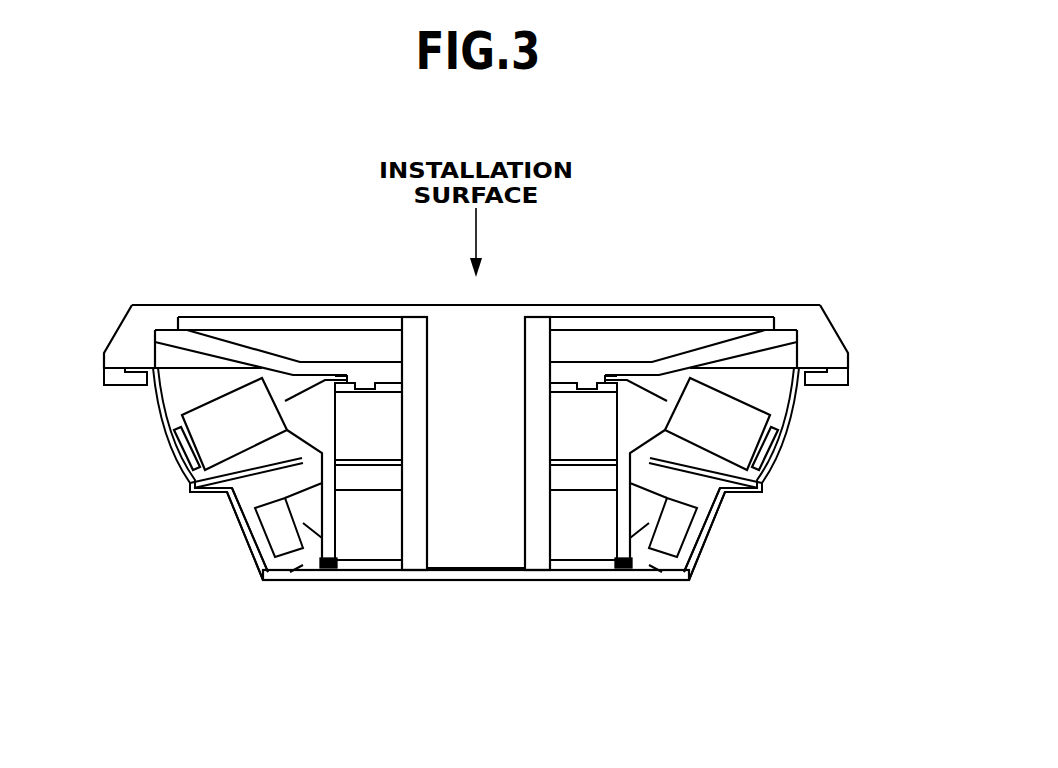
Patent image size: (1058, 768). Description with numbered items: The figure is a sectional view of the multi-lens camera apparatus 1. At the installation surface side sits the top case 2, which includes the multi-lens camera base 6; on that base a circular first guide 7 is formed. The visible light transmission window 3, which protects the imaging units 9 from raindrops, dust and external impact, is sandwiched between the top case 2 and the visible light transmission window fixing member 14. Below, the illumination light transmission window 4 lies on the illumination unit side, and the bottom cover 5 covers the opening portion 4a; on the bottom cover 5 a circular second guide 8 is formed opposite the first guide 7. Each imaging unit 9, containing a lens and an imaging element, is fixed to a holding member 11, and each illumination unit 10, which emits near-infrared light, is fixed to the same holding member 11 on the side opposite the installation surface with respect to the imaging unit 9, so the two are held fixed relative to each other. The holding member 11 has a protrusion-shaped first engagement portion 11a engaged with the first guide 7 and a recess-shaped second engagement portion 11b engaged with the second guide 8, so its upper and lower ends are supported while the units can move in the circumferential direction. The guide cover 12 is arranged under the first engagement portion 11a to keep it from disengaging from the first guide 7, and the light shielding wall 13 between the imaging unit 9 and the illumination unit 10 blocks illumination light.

The multi-lens camera apparatus 1 is at (103, 288).
The top case 2 is at (817, 305).
The visible light transmission window 3 is at (777, 468).
The illumination light transmission window 4 is at (700, 560).
The opening portion 4a is at (645, 585).
The bottom cover 5 is at (497, 580).
The multi-lens camera base 6 is at (745, 345).
The first guide 7 is at (353, 377).
The second guide 8 is at (323, 567).
The imaging unit 9 is at (207, 433).
The illumination unit 10 is at (273, 532).
The holding member 11 is at (317, 457).
The first engagement portion 11a is at (337, 377).
The second engagement portion 11b is at (303, 565).
The guide cover 12 is at (358, 394).
The light shielding wall 13 is at (237, 475).
The visible light transmission window fixing member 14 is at (840, 375).